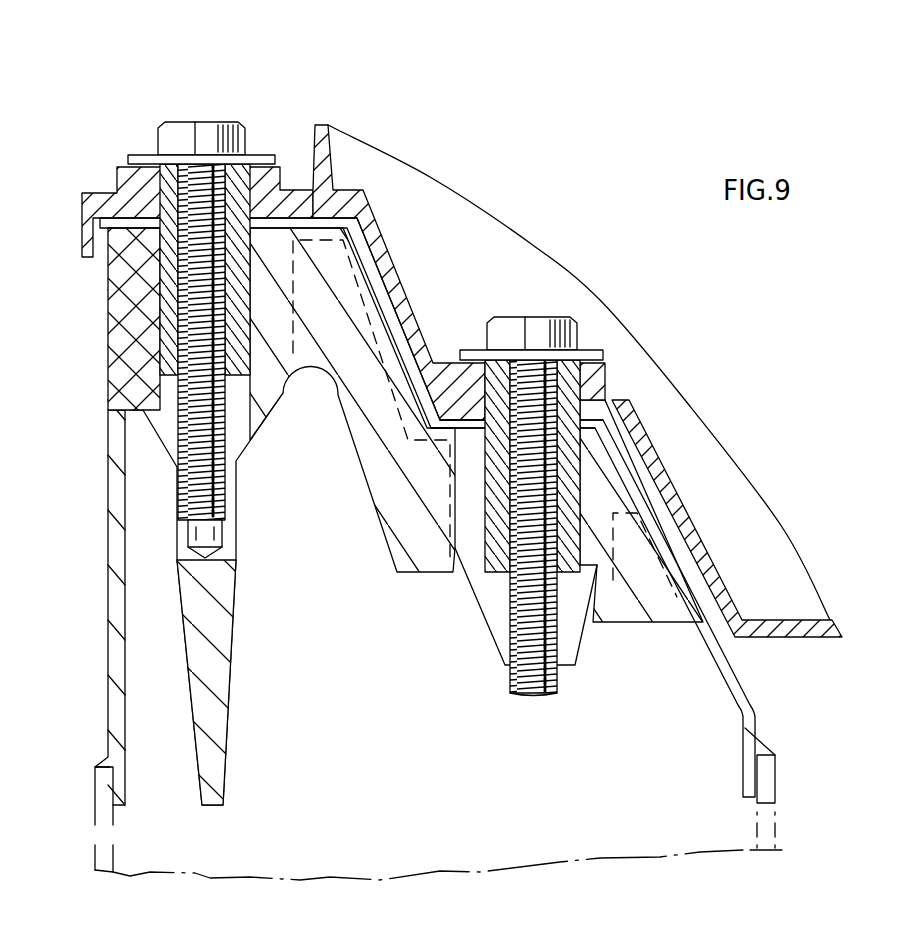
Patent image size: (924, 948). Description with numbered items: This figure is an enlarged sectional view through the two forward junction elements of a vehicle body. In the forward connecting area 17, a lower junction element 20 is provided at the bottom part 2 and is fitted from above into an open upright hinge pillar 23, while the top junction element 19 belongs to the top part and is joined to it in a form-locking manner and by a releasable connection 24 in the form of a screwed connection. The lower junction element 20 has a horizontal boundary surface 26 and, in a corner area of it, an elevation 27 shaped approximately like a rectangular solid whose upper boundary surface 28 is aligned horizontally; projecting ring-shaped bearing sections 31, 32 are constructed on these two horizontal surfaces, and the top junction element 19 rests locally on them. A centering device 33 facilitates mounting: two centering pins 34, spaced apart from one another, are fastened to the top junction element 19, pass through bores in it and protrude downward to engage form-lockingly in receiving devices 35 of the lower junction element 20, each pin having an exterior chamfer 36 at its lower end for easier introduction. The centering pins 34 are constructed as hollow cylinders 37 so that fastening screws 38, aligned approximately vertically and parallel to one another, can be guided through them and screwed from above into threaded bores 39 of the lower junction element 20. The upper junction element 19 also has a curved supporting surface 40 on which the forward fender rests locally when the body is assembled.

The bottom part 2 is at (92, 766).
The forward connecting area 17 is at (297, 101).
The top junction element 19 is at (106, 189).
The lower junction element 20 is at (107, 614).
The hinge pillar 23 is at (776, 799).
The releasable connection 24 is at (190, 121).
The boundary surface 26 is at (448, 410).
The elevation 27 is at (363, 244).
The upper boundary surface 28 is at (336, 200).
The bearing section 31 is at (143, 234).
The bearing section 32 is at (466, 405).
The centering device 33 is at (150, 338).
The centering pin 34 is at (170, 295).
The receiving device 35 is at (467, 567).
The chamfer 36 is at (278, 384).
The hollow cylinder 37 is at (146, 155).
The fastening screw 38 is at (220, 122).
The threaded bore 39 is at (243, 440).
The supporting surface 40 is at (786, 526).